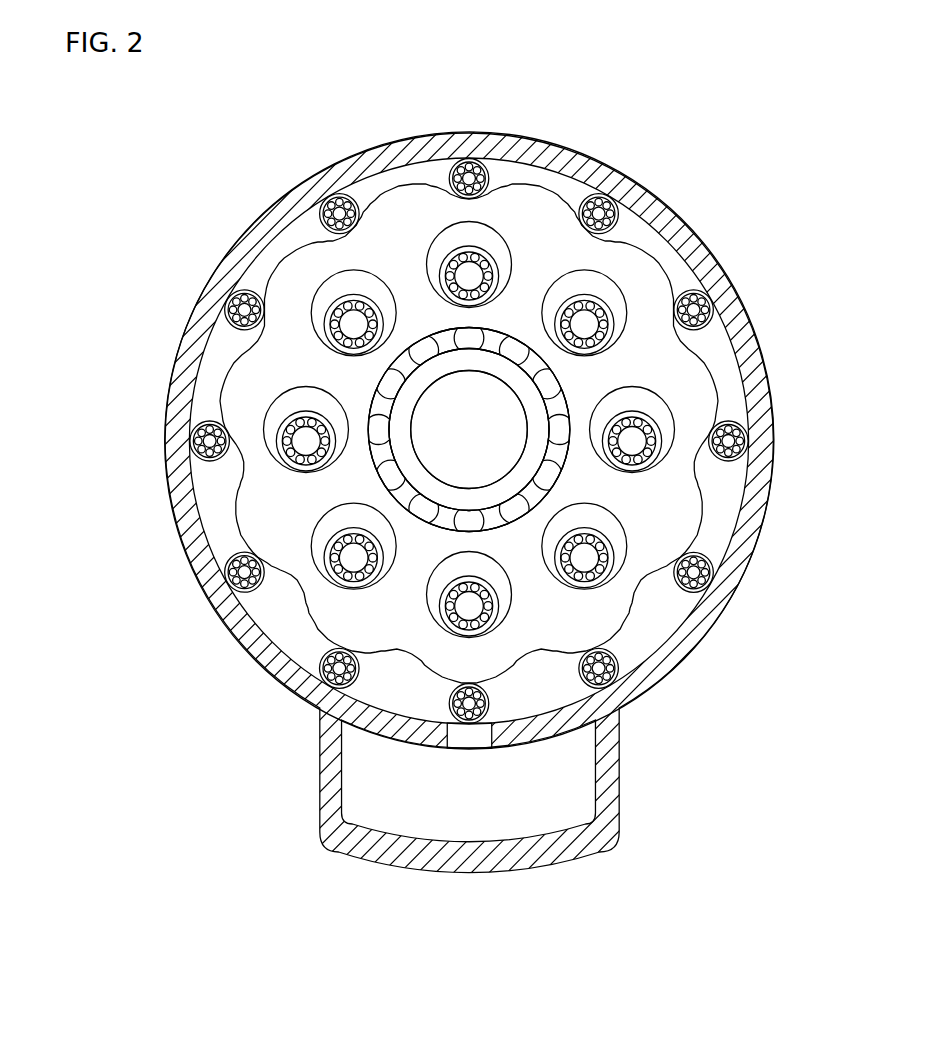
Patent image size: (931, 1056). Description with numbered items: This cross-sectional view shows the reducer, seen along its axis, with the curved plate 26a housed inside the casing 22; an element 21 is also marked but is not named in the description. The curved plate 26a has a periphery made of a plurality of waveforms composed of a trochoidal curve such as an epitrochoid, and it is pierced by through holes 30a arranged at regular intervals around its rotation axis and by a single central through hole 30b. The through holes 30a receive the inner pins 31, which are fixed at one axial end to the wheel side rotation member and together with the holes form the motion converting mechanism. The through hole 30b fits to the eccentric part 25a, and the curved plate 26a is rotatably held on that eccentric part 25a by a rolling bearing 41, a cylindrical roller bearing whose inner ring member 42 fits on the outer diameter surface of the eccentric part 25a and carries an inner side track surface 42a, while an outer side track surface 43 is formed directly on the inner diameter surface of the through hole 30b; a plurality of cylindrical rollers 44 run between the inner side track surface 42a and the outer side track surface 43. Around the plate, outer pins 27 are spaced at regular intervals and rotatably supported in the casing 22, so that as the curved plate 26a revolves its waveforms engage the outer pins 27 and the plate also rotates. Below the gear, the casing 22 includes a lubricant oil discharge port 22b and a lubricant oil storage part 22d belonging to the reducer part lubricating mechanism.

The reduction gear unit casing 21 is at (605, 158).
The casing 22 is at (665, 218).
The lubricant oil discharge port 22b is at (470, 742).
The lubricant oil storage part 22d is at (400, 805).
The eccentric part 25a is at (478, 438).
The curved plate 26a is at (253, 385).
The outer pins 27 is at (242, 312).
The through holes 30a is at (330, 277).
The through hole 30b is at (370, 392).
The inner pins 31 is at (470, 273).
The rolling bearing 41 is at (375, 467).
The inner ring member 42 is at (420, 480).
The inner side track surface 42a is at (523, 485).
The outer side track surface 43 is at (436, 336).
The cylindrical rollers 44 is at (545, 383).